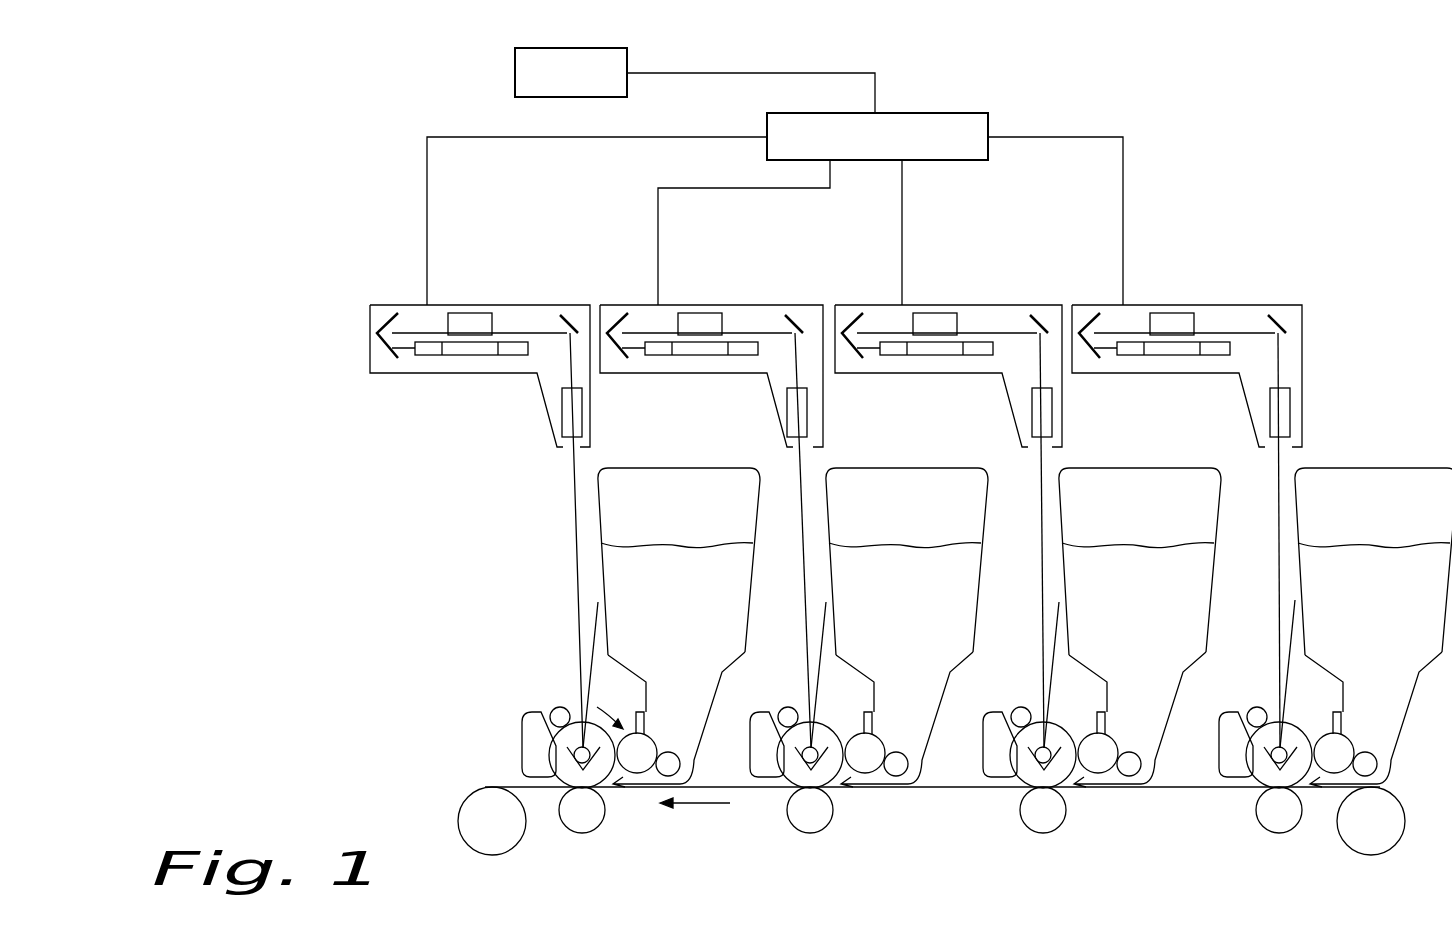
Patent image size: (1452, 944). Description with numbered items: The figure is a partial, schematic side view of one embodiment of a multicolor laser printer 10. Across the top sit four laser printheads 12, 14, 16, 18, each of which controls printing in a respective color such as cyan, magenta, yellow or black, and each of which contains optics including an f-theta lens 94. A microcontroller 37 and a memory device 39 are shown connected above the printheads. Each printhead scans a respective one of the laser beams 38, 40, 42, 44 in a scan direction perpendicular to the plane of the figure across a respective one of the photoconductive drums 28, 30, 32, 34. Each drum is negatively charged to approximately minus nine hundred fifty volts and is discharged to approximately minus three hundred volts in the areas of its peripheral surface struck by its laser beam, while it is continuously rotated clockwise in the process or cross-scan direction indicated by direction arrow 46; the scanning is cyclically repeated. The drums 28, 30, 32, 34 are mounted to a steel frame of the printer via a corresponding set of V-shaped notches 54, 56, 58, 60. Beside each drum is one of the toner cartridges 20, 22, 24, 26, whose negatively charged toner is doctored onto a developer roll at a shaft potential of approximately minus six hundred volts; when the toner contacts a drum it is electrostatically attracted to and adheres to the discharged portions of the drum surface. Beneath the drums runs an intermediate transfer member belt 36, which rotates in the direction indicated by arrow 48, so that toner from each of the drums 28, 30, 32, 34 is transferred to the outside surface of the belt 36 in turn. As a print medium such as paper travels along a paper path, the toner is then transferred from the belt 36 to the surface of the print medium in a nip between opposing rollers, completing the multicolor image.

The multicolor laser printer 10 is at (1350, 166).
The laser printhead 12 is at (500, 305).
The laser printhead 14 is at (732, 305).
The laser printhead 16 is at (990, 305).
The laser printhead 18 is at (1213, 305).
The toner cartridge 20 is at (703, 613).
The toner cartridge 22 is at (931, 613).
The toner cartridge 24 is at (1164, 613).
The toner cartridge 26 is at (1400, 613).
The photoconductive drum 28 is at (572, 723).
The photoconductive drum 30 is at (803, 725).
The photoconductive drum 32 is at (1037, 725).
The photoconductive drum 34 is at (1273, 723).
The intermediate transfer member belt 36 is at (956, 788).
The microcontroller 37 is at (955, 113).
The laser beam 38 is at (575, 487).
The memory device 39 is at (515, 73).
The laser beam 40 is at (800, 497).
The laser beam 42 is at (1036, 505).
The laser beam 44 is at (1278, 500).
The direction arrow 46 is at (610, 712).
The arrow 48 is at (698, 803).
The V-shaped notch 54 is at (596, 772).
The V-shaped notch 56 is at (815, 772).
The V-shaped notch 58 is at (1050, 772).
The V-shaped notch 60 is at (1260, 768).
The f-theta lens 94 is at (582, 422).